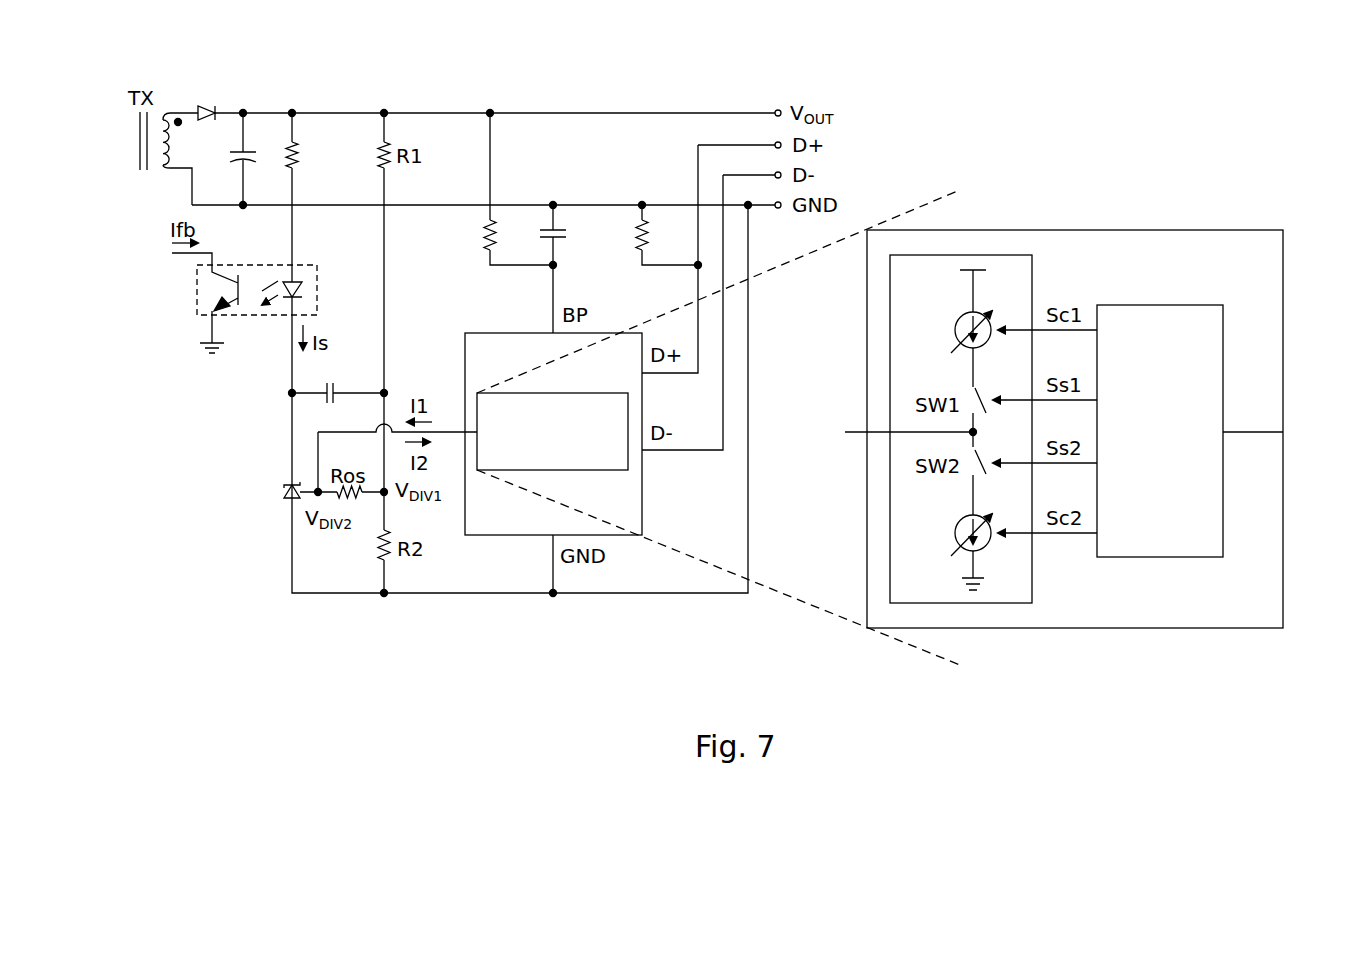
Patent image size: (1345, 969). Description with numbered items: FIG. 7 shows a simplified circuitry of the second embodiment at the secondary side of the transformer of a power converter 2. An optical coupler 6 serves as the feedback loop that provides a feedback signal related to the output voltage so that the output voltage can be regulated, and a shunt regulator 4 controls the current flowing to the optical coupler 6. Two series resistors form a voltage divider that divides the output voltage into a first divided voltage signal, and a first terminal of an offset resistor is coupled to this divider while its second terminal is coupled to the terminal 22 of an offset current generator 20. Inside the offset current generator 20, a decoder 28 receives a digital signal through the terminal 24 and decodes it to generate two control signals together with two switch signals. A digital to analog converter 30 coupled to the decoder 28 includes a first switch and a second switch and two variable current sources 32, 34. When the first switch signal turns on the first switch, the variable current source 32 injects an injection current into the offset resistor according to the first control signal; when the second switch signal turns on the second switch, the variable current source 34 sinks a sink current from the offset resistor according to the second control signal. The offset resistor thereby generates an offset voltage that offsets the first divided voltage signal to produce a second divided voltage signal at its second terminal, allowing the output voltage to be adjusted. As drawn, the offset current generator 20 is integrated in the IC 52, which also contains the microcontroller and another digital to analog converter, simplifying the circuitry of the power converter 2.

The power converter 2 is at (796, 80).
The shunt regulator 4 is at (288, 500).
The optical coupler 6 is at (258, 265).
The offset current generator 20 is at (578, 393).
The terminal 22 is at (462, 430).
The terminal 24 is at (1283, 432).
The decoder 28 is at (1157, 305).
The digital to analog converter 30 is at (1032, 280).
The variable current source 32 is at (952, 320).
The variable current source 34 is at (952, 522).
The IC 52 is at (500, 333).